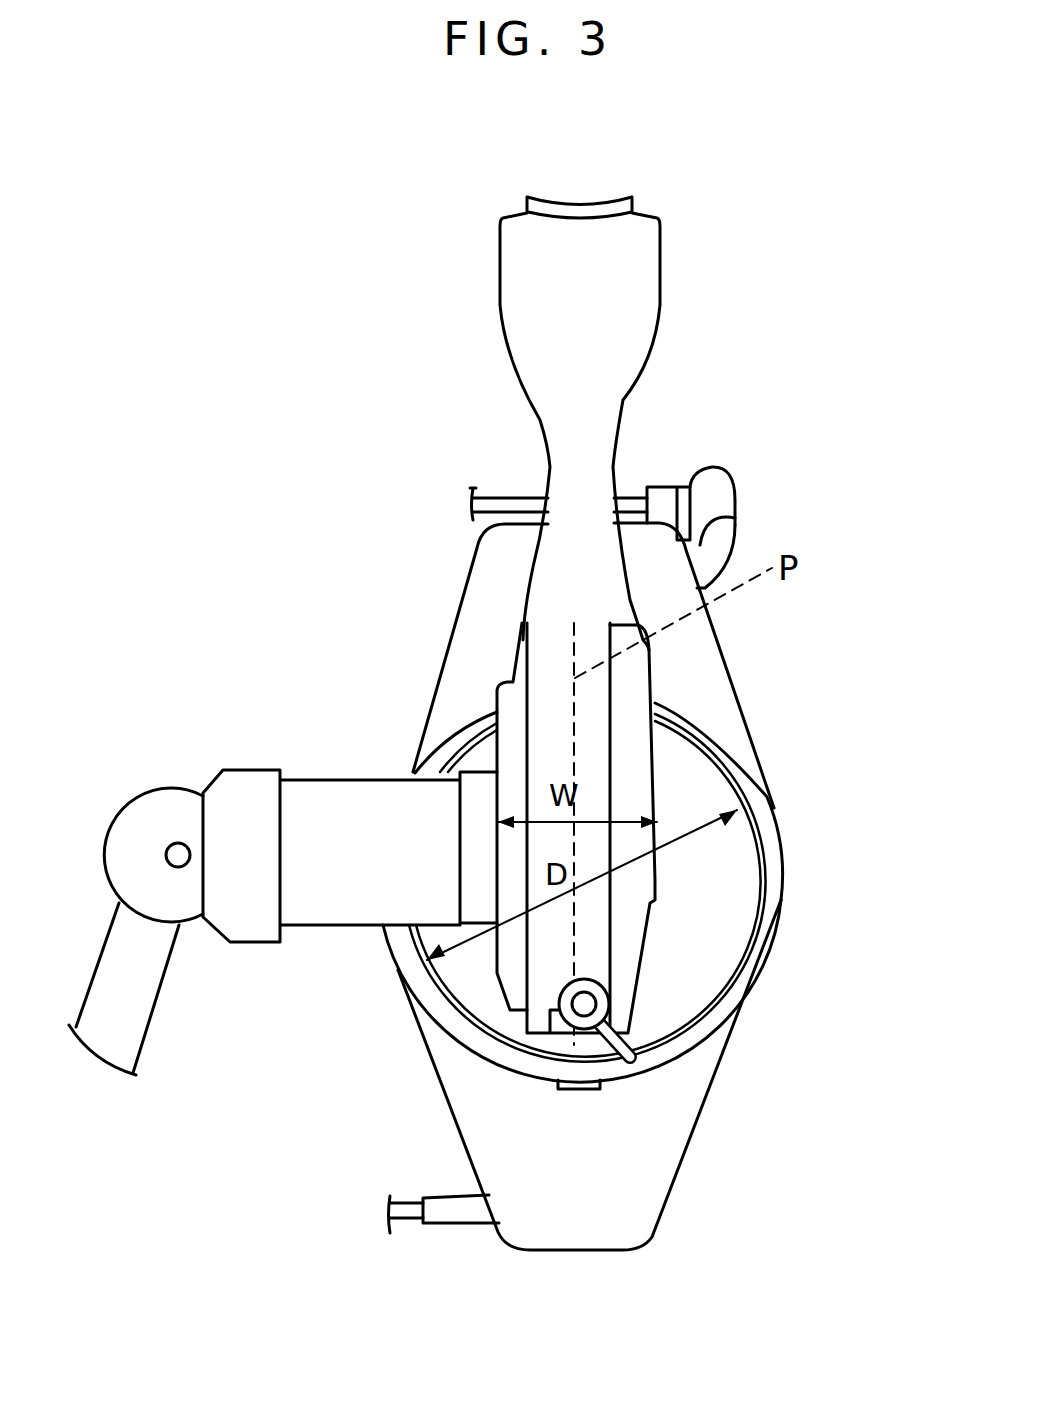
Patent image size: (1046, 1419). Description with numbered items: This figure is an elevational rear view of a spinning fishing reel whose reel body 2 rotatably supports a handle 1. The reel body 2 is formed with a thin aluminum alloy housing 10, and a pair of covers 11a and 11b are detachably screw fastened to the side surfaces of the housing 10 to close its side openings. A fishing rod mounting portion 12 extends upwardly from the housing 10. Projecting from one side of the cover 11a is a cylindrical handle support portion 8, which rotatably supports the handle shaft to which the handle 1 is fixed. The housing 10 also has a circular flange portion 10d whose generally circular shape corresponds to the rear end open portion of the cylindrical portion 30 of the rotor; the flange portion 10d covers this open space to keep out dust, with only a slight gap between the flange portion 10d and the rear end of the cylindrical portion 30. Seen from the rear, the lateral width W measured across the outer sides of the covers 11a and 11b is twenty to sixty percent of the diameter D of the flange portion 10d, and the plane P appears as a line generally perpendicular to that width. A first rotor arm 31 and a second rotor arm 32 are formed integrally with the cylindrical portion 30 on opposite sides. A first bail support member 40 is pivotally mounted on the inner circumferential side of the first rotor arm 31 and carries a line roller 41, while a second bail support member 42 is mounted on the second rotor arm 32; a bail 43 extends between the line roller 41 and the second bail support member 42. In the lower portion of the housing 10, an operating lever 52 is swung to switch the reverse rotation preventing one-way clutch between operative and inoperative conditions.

The handle 1 is at (160, 993).
The reel body 2 is at (658, 730).
The handle support portion 8 is at (322, 927).
The housing 10 is at (612, 866).
The circular flange portion 10d is at (712, 960).
The cover 11a is at (503, 723).
The cover 11b is at (652, 797).
The fishing rod mounting portion 12 is at (607, 458).
The cylindrical portion 30 is at (773, 923).
The first rotor arm 31 is at (483, 578).
The second rotor arm 32 is at (622, 1213).
The first bail support member 40 is at (722, 542).
The line roller 41 is at (715, 468).
The second bail support member 42 is at (462, 1217).
The bail 43 is at (405, 1220).
The operating lever 52 is at (663, 1042).